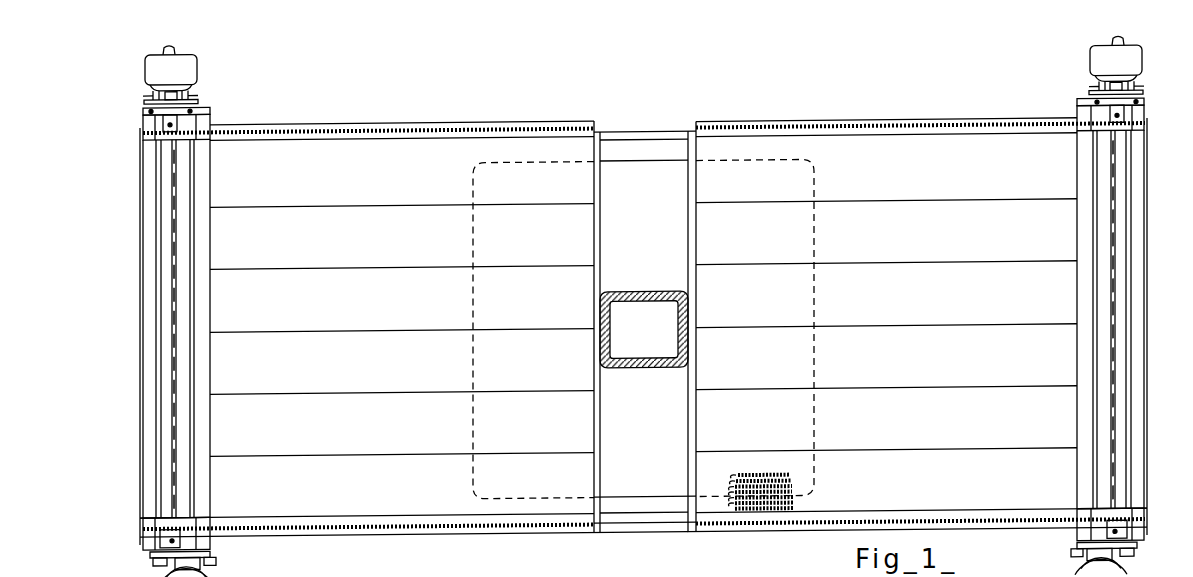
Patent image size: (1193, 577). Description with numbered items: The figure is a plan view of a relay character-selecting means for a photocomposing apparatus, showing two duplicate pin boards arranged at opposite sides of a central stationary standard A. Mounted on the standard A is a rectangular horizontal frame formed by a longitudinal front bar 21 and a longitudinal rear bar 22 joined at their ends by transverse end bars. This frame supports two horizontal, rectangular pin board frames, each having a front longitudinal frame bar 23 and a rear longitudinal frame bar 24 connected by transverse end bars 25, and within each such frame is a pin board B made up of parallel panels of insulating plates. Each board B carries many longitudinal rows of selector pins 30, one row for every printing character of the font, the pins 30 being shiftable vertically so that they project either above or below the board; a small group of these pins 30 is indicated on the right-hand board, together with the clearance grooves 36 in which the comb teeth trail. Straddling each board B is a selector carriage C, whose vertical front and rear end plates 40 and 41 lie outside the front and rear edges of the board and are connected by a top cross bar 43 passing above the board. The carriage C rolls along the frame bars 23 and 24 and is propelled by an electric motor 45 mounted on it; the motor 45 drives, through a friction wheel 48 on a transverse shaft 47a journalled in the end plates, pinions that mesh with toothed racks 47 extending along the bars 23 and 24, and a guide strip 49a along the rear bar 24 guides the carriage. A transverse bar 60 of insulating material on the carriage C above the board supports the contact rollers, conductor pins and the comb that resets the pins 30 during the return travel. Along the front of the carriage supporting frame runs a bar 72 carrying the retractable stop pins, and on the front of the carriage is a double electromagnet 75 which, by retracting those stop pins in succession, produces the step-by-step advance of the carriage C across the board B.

The front bar 21 is at (657, 525).
The rear bar 22 is at (660, 135).
The front longitudinal frame bar 23 is at (394, 509).
The rear longitudinal frame bar 24 is at (462, 142).
The transverse end bar 25 is at (601, 261).
The selector pin 30 is at (757, 486).
The clearance groove 36 is at (735, 488).
The front end plate 40 is at (212, 543).
The rear end plate 41 is at (210, 113).
The top cross bar 43 is at (143, 178).
The electric motor 45 is at (643, 306).
The toothed rack 47 is at (522, 135).
The transverse shaft 47a is at (173, 400).
The wheel 48 is at (192, 105).
The guide strip 49a is at (383, 127).
The transverse bar 60 is at (197, 378).
The bar 72 is at (410, 535).
The double electromagnet 75 is at (1110, 568).
The stationary standard A is at (644, 329).
The pin board B is at (643, 326).
The selector carriage C is at (210, 319).